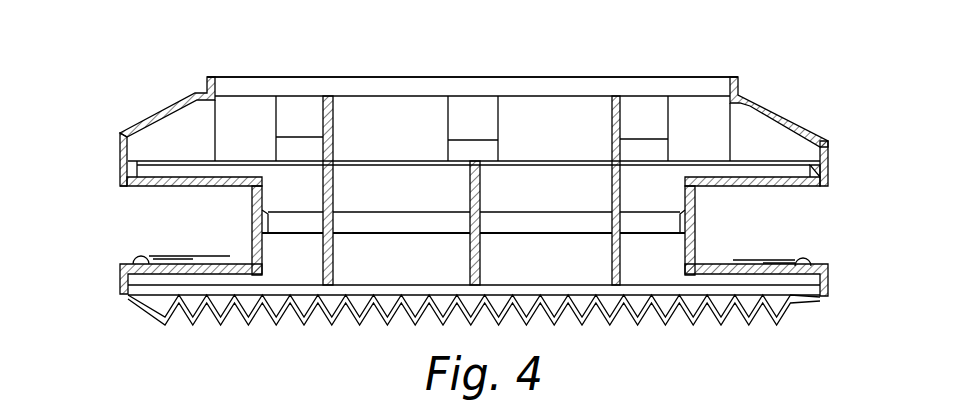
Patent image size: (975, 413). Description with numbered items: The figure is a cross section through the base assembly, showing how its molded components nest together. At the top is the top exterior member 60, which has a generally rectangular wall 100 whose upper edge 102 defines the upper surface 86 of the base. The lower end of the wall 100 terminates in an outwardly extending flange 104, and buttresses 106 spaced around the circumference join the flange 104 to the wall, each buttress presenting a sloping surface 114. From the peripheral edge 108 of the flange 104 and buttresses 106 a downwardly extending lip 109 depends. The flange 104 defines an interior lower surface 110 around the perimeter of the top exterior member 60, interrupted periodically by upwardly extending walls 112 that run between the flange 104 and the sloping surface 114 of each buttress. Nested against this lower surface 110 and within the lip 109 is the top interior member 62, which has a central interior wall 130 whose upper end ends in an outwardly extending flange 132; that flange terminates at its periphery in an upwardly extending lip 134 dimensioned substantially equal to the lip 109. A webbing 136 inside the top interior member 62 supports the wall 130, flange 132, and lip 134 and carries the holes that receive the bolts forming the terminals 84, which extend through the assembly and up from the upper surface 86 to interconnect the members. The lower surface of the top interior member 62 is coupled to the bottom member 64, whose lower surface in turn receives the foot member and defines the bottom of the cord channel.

The top exterior member 60 is at (838, 136).
The top interior member 62 is at (816, 199).
The bottom member 64 is at (841, 270).
The terminals 84 is at (335, 95).
The upper surface 86 is at (526, 76).
The wall 100 is at (376, 145).
The upper edge 102 is at (413, 76).
The flange 104 is at (153, 160).
The buttresses 106 is at (173, 100).
The peripheral edge 108 is at (120, 152).
The lip 109 is at (120, 178).
The lower surface 110 is at (172, 164).
The upwardly extending walls 112 is at (448, 140).
The sloping surface 114 is at (485, 133).
The central interior wall 130 is at (696, 201).
The flange 132 is at (770, 189).
The lip 134 is at (820, 168).
The webbing 136 is at (470, 187).